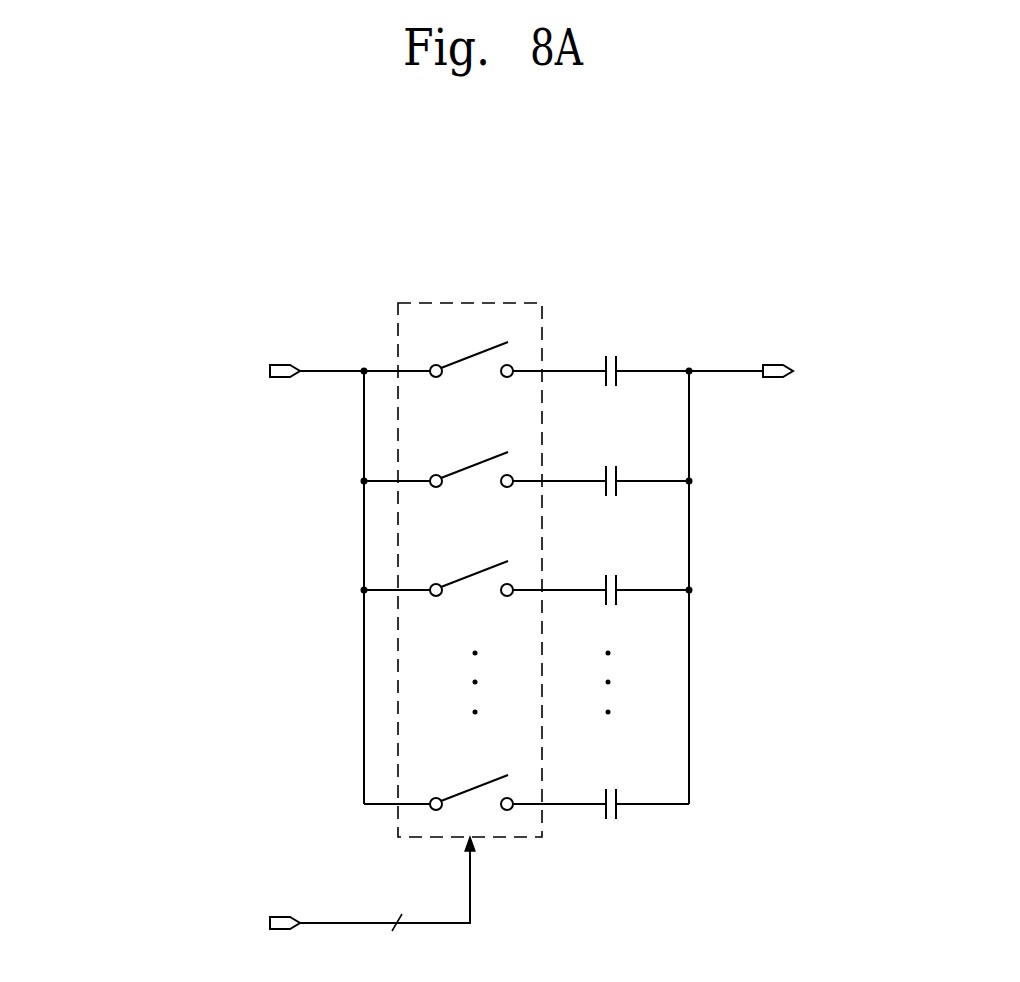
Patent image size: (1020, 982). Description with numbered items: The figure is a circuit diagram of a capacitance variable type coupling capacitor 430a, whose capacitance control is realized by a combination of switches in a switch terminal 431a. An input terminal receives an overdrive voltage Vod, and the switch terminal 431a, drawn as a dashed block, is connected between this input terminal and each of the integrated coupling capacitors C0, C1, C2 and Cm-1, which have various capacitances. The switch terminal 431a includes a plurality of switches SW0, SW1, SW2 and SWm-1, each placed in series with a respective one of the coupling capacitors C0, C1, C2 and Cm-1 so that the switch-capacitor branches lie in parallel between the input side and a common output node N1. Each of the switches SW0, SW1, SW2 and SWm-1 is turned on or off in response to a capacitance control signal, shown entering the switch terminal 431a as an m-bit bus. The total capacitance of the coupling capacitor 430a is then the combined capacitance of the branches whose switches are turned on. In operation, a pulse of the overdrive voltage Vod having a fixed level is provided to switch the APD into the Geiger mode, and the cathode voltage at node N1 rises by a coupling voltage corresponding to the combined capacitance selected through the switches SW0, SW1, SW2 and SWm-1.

The coupling capacitor 430a is at (798, 207).
The switch terminal 431a is at (498, 303).
The switch SW0 is at (471, 351).
The switch SW1 is at (471, 461).
The switch SW2 is at (471, 570).
The switch SWm-1 is at (471, 783).
The coupling capacitor C0 is at (610, 355).
The coupling capacitor C1 is at (610, 465).
The coupling capacitor C2 is at (610, 574).
The coupling capacitor Cm-1 is at (603, 788).
The overdrive voltage Vod is at (292, 371).
The cathode node N1 is at (757, 371).